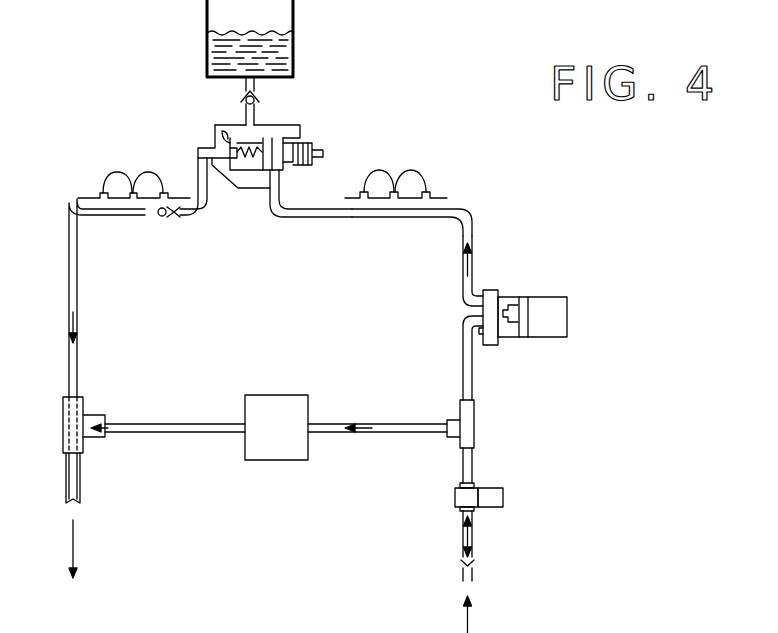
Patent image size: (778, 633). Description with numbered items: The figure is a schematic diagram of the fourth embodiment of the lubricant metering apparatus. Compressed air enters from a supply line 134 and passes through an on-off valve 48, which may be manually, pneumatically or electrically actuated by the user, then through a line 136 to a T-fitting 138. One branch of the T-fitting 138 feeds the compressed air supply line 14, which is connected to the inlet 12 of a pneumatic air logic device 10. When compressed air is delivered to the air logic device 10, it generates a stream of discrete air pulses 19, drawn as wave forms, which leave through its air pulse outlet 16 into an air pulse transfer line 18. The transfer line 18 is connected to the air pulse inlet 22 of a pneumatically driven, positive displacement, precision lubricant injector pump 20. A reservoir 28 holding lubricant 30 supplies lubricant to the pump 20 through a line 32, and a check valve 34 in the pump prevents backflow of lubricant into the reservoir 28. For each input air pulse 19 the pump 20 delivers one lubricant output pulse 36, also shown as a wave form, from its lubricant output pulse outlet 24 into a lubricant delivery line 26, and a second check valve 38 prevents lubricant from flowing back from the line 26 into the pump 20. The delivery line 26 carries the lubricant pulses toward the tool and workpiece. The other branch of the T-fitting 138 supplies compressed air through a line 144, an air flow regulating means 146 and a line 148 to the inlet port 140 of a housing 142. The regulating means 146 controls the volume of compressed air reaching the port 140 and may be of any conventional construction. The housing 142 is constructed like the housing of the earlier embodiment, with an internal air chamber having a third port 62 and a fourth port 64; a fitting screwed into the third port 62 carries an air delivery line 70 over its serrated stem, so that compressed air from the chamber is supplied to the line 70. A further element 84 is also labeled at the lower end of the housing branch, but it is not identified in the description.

The pneumatic air logic device 10 is at (545, 305).
The inlet 12 is at (481, 311).
The compressed air supply line 14 is at (473, 378).
The air pulse outlet 16 is at (473, 282).
The air pulse transfer line 18 is at (460, 210).
The air pulses 19 is at (396, 170).
The lubricant injector pump 20 is at (242, 172).
The air pulse inlet 22 is at (283, 213).
The lubricant output pulse outlet 24 is at (200, 149).
The lubricant delivery line 26 is at (69, 247).
The reservoir 28 is at (296, 12).
The lubricant 30 is at (207, 57).
The line 32 is at (261, 79).
The check valve 34 is at (244, 100).
The lubricant output pulses 36 is at (134, 176).
The check valve 38 is at (165, 220).
The on-off valve 48 is at (503, 497).
The third port 62 is at (66, 448).
The fourth port 64 is at (63, 407).
The air delivery line 70 is at (80, 498).
The inner tube 84 is at (70, 488).
The supply line 134 is at (473, 540).
The line 136 is at (473, 459).
The T-fitting 138 is at (474, 416).
The inlet port 140 is at (95, 437).
The housing 142 is at (112, 392).
The line 144 is at (395, 428).
The air flow regulating means 146 is at (298, 447).
The line 148 is at (181, 426).